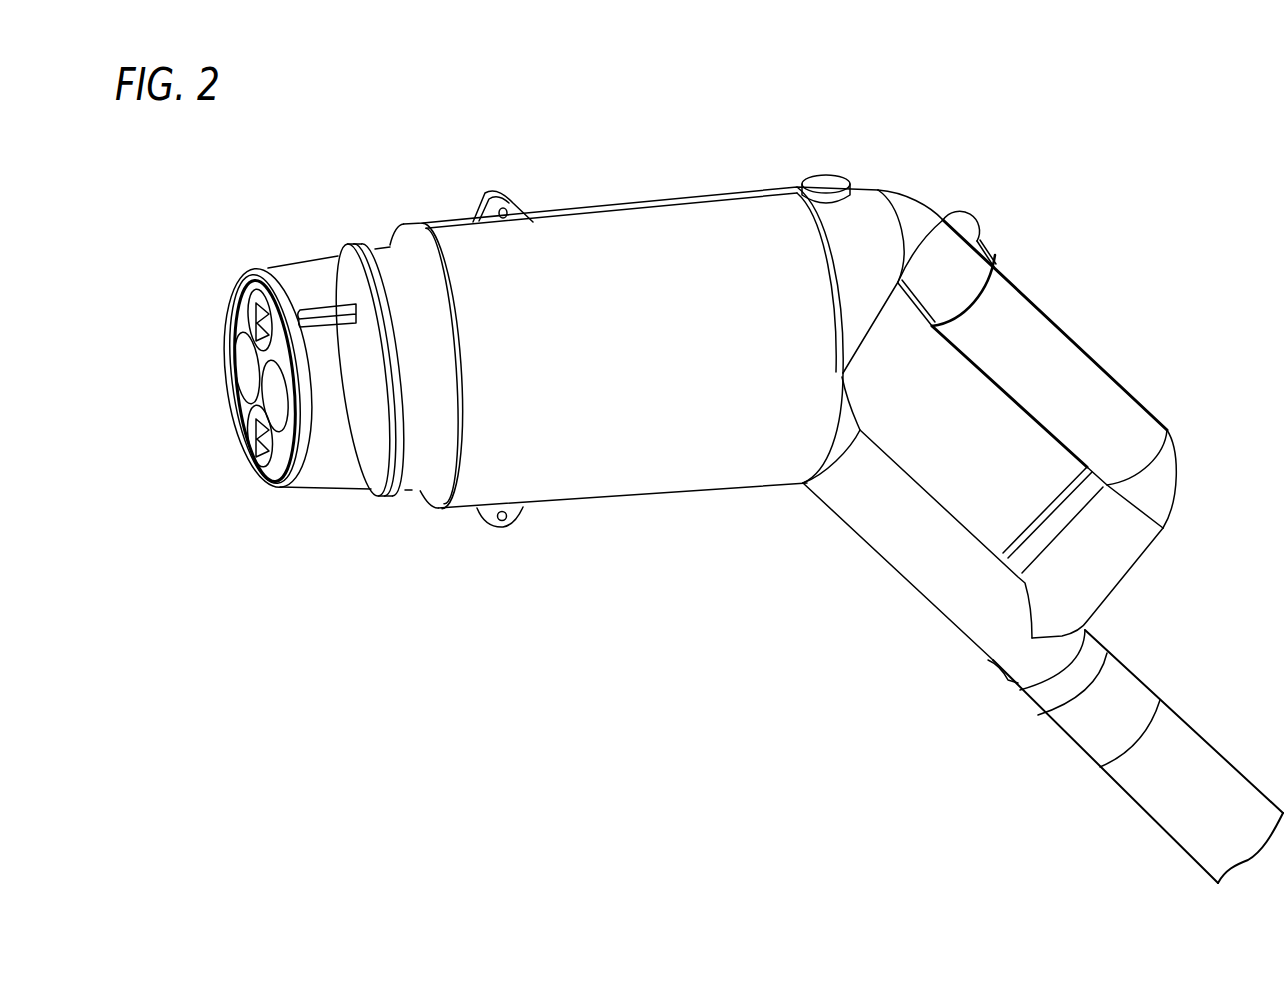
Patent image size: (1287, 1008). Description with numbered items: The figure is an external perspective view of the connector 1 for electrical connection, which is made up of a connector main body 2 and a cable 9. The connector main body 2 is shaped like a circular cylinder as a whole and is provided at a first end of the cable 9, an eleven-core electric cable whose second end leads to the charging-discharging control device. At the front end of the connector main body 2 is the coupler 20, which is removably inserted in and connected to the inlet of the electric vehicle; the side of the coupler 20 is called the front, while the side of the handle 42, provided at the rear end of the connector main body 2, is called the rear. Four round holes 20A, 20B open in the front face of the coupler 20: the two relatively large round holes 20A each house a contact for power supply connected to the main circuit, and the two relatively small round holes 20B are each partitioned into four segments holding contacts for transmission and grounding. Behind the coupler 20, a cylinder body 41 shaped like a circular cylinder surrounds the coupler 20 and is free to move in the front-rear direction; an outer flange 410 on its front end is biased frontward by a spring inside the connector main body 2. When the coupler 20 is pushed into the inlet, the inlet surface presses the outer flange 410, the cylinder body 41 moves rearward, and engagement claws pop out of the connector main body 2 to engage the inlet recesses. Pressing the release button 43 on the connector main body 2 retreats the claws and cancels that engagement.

The connector 1 is at (335, 203).
The connector main body 2 is at (632, 198).
The cable 9 is at (1207, 770).
The coupler 20 is at (274, 467).
The round holes 20A is at (277, 387).
The round holes 20B is at (263, 320).
The cylinder body 41 is at (417, 478).
The outer flange 410 is at (367, 493).
The handle 42 is at (1100, 362).
The release button 43 is at (825, 180).